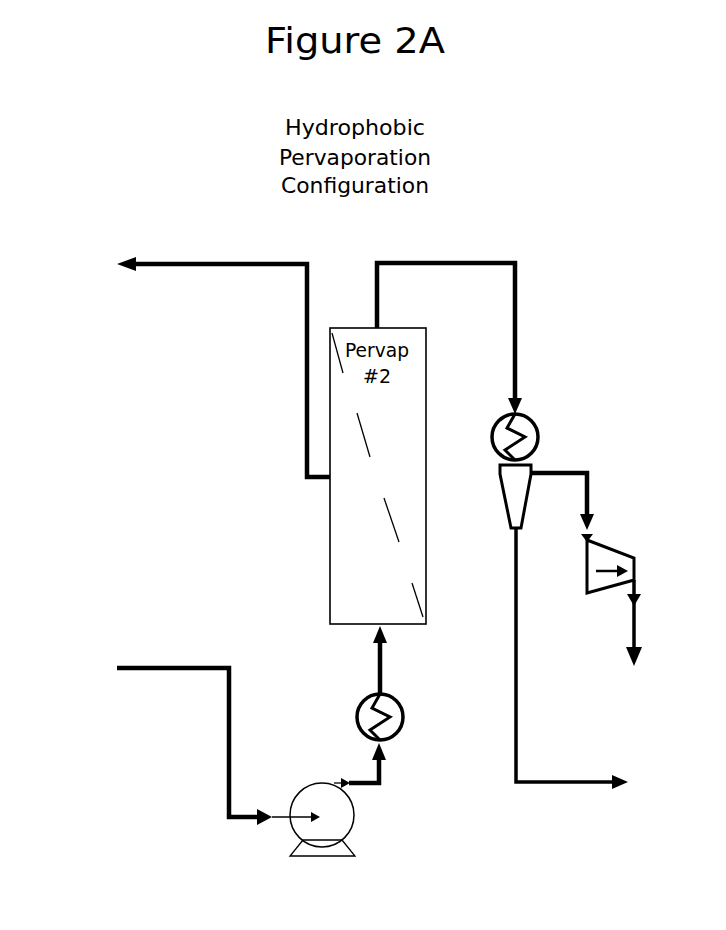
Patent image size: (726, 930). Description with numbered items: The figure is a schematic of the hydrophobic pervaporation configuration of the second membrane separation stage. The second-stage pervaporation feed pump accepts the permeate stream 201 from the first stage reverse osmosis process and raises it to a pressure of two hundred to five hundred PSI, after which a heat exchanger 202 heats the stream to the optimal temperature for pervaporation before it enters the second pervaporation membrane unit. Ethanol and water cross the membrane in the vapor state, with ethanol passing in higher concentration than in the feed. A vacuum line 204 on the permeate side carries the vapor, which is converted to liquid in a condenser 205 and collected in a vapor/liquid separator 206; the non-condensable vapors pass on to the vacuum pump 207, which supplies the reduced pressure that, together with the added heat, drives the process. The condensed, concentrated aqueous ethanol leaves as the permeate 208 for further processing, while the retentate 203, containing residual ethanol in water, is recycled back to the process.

The permeate stream 201 is at (202, 675).
The heat exchanger 202 is at (410, 717).
The retentate 203 is at (302, 383).
The permeate vacuum line 204 is at (524, 315).
The condenser 205 is at (545, 431).
The vapor/liquid separator 206 is at (503, 500).
The vacuum pump 207 is at (642, 608).
The permeate 208 is at (522, 625).